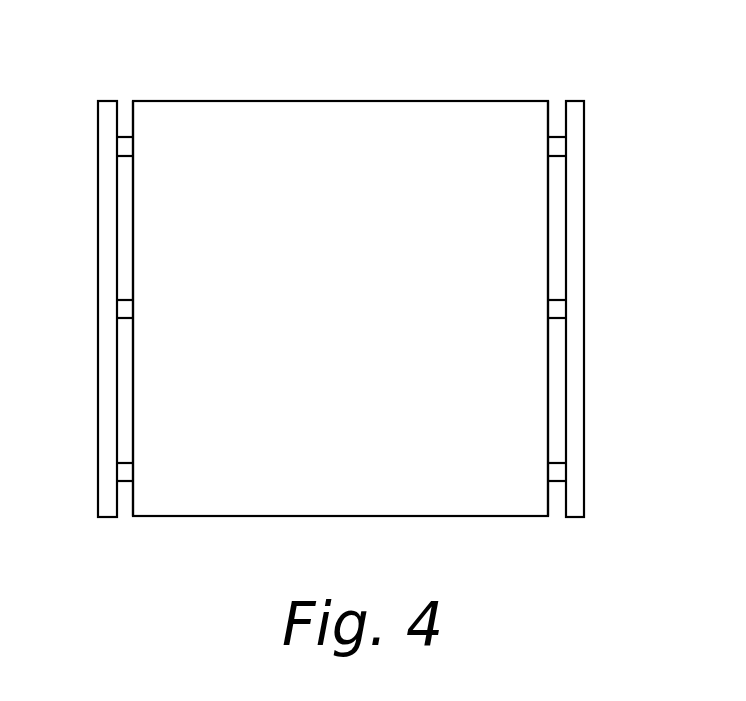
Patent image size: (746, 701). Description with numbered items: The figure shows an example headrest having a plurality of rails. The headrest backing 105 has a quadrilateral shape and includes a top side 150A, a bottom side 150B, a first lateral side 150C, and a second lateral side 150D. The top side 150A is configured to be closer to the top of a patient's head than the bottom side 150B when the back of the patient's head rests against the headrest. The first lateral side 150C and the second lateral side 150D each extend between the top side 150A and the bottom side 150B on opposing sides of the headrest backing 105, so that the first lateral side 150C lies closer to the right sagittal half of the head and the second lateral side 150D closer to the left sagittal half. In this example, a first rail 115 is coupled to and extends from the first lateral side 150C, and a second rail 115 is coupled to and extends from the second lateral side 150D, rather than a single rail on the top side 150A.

The headrest backing 105 is at (333, 483).
The rail 115 is at (98, 163).
The top side 150A is at (323, 101).
The bottom side 150B is at (508, 516).
The first lateral side 150C is at (134, 110).
The second lateral side 150D is at (548, 110).